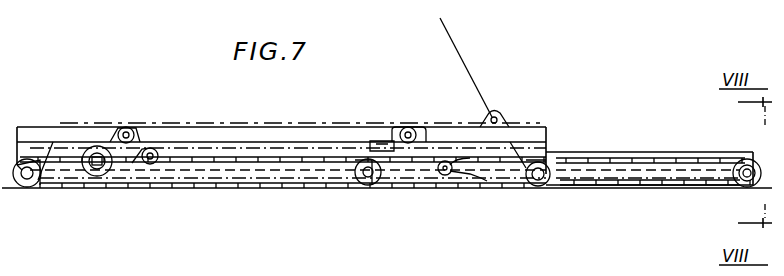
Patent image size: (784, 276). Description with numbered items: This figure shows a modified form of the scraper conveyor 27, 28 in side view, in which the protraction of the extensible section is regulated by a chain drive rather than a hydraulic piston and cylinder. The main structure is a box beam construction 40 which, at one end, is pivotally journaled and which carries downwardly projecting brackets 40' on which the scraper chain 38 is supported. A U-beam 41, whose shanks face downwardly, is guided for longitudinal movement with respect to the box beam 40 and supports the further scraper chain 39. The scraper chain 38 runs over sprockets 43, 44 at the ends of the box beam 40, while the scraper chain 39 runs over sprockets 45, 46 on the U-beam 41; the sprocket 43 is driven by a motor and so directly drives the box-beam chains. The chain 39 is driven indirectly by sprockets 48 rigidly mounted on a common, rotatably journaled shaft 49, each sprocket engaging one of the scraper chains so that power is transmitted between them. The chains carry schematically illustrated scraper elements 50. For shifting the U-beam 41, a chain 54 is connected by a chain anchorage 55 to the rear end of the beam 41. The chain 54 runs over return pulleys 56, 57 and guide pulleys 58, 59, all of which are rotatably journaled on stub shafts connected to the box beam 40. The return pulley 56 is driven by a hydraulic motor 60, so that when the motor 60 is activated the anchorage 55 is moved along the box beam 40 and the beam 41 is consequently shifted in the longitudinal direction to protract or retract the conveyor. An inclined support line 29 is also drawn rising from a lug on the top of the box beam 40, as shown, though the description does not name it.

The scraper conveyor 27 is at (290, 190).
The scraper conveyor 28 is at (690, 189).
The support cable 29 is at (478, 83).
The scraper chain 38 is at (253, 185).
The scraper chain 39 is at (647, 186).
The box beam construction 40 is at (285, 131).
The downwardly projecting bracket 40' is at (39, 133).
The U-beam 41 is at (648, 151).
The sprocket 43 is at (32, 186).
The sprocket 44 is at (546, 186).
The sprocket 45 is at (371, 186).
The sprocket 46 is at (743, 186).
The sprocket 48 is at (445, 185).
The common shaft 49 is at (481, 186).
The scraper element 50 is at (340, 186).
The chain 54 is at (211, 124).
The chain anchorage 55 is at (354, 148).
The return pulley 56 is at (100, 175).
The return pulley 57 is at (409, 127).
The guide pulley 58 is at (128, 128).
The guide pulley 59 is at (151, 165).
The hydraulic motor 60 is at (92, 172).